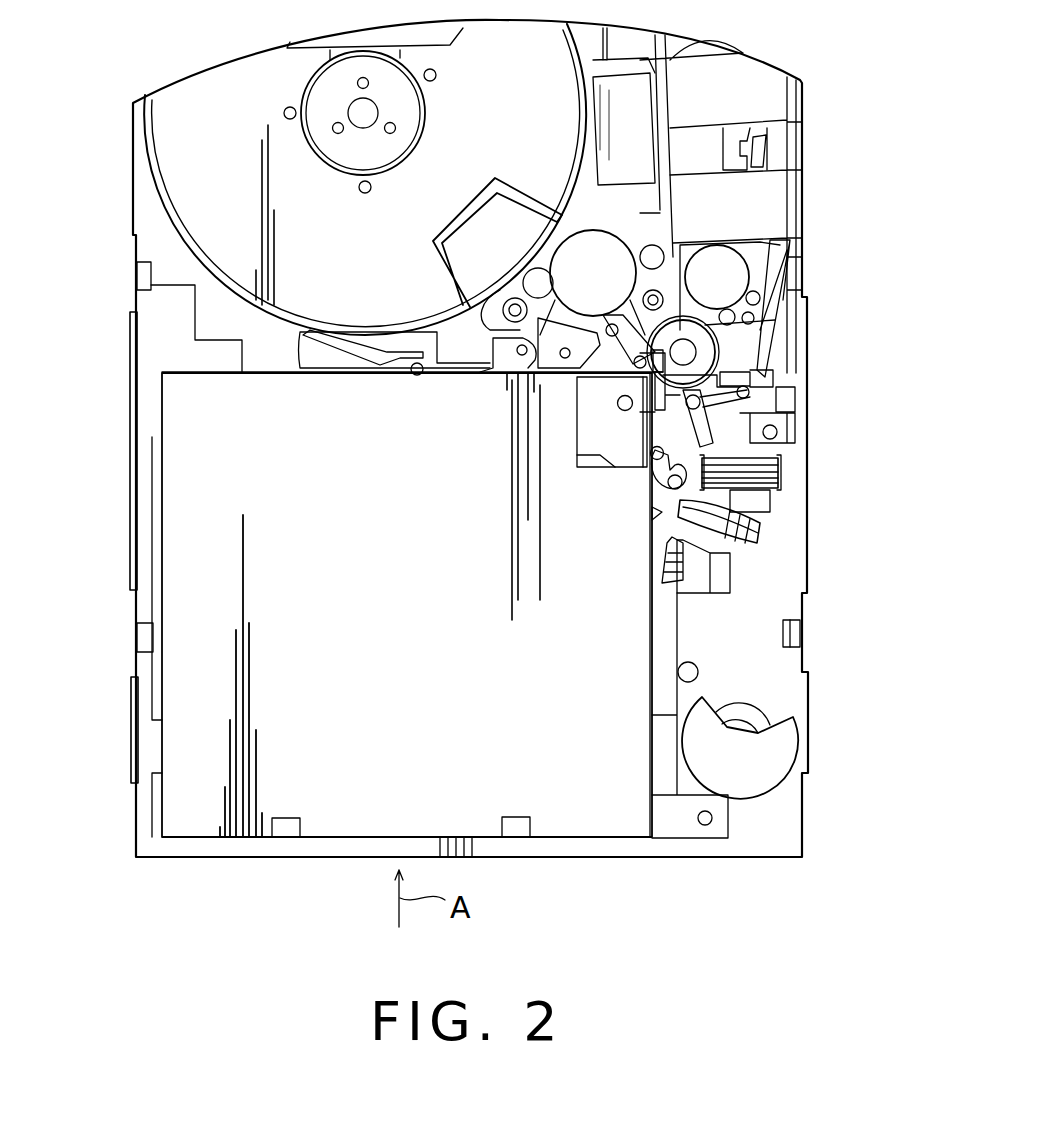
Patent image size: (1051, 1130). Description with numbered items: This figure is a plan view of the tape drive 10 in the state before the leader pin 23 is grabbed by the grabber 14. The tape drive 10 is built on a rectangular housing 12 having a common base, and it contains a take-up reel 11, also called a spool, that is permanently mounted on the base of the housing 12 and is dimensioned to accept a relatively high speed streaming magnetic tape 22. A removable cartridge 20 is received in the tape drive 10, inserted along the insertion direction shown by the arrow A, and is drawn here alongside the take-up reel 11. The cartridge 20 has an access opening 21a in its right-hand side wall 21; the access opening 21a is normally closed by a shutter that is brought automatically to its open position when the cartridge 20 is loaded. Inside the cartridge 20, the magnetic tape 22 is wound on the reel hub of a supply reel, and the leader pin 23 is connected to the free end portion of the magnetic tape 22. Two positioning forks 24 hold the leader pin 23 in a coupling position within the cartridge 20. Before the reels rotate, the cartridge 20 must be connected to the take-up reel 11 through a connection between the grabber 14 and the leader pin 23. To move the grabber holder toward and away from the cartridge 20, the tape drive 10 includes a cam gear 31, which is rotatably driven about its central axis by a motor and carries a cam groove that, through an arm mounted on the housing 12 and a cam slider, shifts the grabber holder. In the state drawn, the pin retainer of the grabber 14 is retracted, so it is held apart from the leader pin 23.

The tape drive 10 is at (832, 128).
The take-up reel 11 is at (187, 150).
The housing 12 is at (785, 818).
The grabber 14 is at (780, 482).
The cartridge 20 is at (328, 555).
The right-hand side wall 21 is at (655, 700).
The access opening 21a is at (680, 425).
The magnetic tape 22 is at (617, 405).
The leader pin 23 is at (633, 402).
The positioning forks 24 is at (650, 420).
The cam gear 31 is at (763, 537).